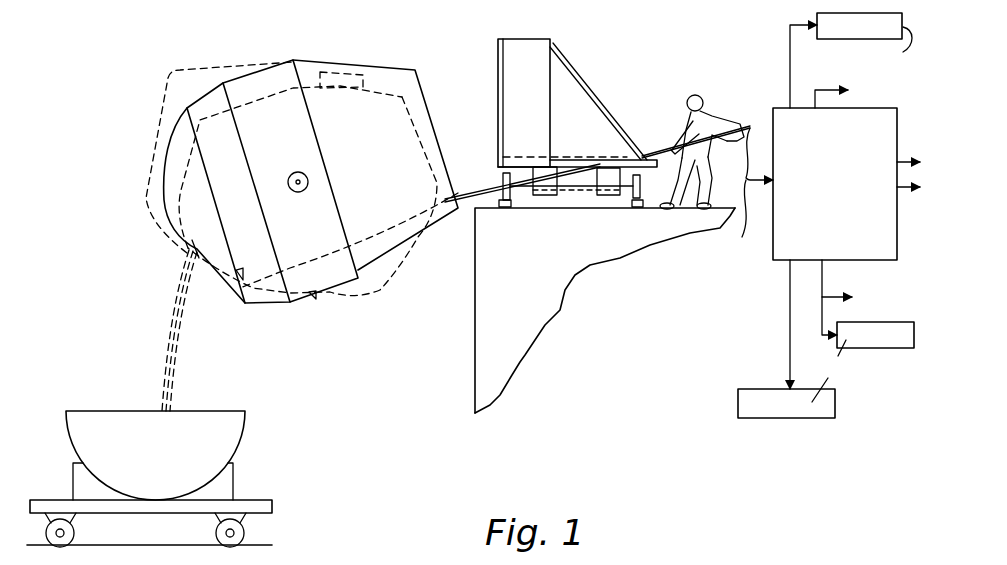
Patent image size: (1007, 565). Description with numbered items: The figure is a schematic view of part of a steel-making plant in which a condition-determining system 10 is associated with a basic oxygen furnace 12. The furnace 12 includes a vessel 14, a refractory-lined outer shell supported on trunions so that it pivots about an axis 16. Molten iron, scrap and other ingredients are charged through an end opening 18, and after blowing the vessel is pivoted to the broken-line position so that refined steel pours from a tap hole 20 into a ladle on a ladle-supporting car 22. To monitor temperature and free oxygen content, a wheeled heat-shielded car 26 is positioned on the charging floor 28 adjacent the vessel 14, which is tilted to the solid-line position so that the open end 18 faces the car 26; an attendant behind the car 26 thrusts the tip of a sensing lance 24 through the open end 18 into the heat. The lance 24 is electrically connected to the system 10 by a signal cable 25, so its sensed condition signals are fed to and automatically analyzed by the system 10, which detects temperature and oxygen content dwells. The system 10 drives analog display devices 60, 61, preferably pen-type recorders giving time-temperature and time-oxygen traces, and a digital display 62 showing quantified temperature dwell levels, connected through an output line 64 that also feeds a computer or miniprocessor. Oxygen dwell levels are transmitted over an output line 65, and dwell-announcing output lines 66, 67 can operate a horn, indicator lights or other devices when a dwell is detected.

The condition-determining system 10 is at (846, 211).
The basic oxygen furnace 12 is at (238, 50).
The vessel 14 is at (337, 274).
The axis 16 is at (298, 192).
The end opening 18 is at (440, 140).
The tap hole 20 is at (322, 86).
The ladle-supporting car 22 is at (213, 452).
The sensing lance 24 is at (485, 208).
The signal cable 25 is at (707, 198).
The heat-shielded car 26 is at (586, 74).
The charging floor 28 is at (597, 205).
The analog display device 60 is at (786, 339).
The analog display device 61 is at (851, 60).
The digital display 62 is at (863, 349).
The output line 64 is at (826, 295).
The output line 65 is at (828, 88).
The dwell-announcing output line 66 is at (900, 187).
The dwell-announcing output line 67 is at (900, 160).